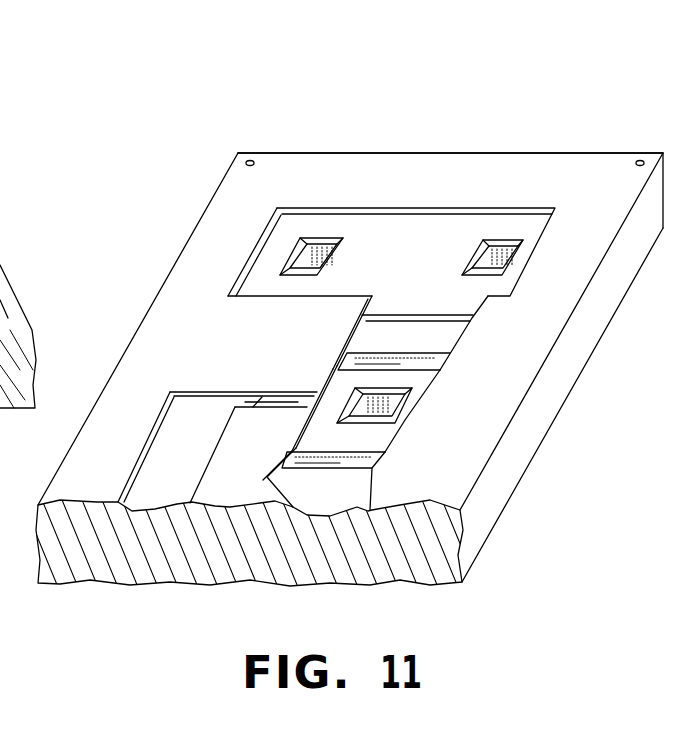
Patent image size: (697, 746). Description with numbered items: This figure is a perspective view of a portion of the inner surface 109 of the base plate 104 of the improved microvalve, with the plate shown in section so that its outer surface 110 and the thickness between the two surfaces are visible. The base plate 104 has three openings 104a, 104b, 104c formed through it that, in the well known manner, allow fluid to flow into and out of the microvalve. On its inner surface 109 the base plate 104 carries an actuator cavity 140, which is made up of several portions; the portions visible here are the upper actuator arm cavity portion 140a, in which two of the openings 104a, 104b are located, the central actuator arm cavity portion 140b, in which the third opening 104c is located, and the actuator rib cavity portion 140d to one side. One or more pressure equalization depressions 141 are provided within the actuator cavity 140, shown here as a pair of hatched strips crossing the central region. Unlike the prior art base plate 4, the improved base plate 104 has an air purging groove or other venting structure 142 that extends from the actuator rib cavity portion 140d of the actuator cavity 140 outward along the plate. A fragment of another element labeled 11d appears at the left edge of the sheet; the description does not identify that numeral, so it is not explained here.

The base plate 104 is at (278, 150).
The inner surface 109 is at (603, 173).
The outer surface 110 is at (207, 585).
The actuator cavity 140 is at (410, 234).
The upper actuator arm cavity portion 140a is at (363, 230).
The central actuator arm cavity portion 140b is at (415, 378).
The actuator rib cavity portion 140d is at (167, 433).
The pressure equalization depressions 141 is at (418, 355).
The air purging groove 142 is at (263, 397).
The opening 104a is at (318, 258).
The opening 104b is at (497, 255).
The opening 104c is at (382, 413).
The component 11d is at (24, 300).
The base plate 4 is at (4, 230).